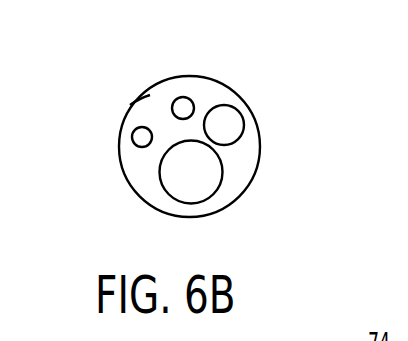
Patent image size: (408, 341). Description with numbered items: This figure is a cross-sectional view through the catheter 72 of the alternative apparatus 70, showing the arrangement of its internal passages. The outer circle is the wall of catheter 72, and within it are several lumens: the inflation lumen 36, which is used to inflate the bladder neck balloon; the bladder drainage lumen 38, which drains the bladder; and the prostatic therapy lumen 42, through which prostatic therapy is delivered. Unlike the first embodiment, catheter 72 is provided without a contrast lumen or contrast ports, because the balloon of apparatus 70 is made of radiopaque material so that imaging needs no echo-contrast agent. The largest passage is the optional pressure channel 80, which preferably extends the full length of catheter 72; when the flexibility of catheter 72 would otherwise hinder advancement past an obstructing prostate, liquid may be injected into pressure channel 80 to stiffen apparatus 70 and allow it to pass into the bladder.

The apparatus 70 is at (255, 80).
The catheter 72 is at (143, 106).
The inflation lumen 36 is at (183, 97).
The prostatic therapy lumen 42 is at (142, 137).
The bladder drainage lumen 38 is at (235, 124).
The pressure channel 80 is at (222, 180).